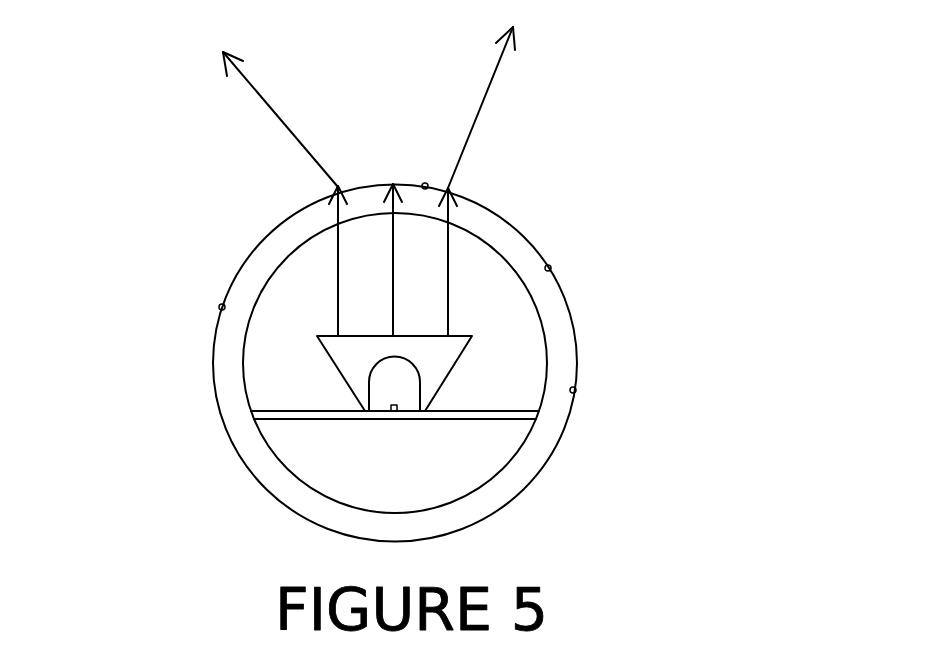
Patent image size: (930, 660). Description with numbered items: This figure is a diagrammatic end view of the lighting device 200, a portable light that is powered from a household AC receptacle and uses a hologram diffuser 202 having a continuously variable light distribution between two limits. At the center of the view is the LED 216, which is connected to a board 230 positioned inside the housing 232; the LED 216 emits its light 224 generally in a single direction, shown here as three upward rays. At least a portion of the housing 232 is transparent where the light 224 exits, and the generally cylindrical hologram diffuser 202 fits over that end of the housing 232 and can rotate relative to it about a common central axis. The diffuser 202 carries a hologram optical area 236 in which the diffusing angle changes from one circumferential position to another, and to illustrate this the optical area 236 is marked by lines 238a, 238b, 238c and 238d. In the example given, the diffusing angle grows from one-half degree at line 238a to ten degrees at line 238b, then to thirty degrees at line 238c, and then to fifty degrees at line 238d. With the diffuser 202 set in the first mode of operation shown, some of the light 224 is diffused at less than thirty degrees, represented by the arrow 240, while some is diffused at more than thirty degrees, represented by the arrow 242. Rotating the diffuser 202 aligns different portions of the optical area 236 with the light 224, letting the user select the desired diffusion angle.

The lighting device 200 is at (634, 144).
The hologram diffuser 202 is at (563, 432).
The LED 216 is at (384, 400).
The light 224 is at (393, 230).
The board 230 is at (286, 419).
The housing 232 is at (497, 472).
The hologram optical area 236 is at (574, 310).
The line 238a is at (576, 390).
The line 238b is at (551, 268).
The line 238c is at (426, 183).
The line 238d is at (219, 307).
The arrow 240 is at (487, 92).
The arrow 242 is at (268, 100).